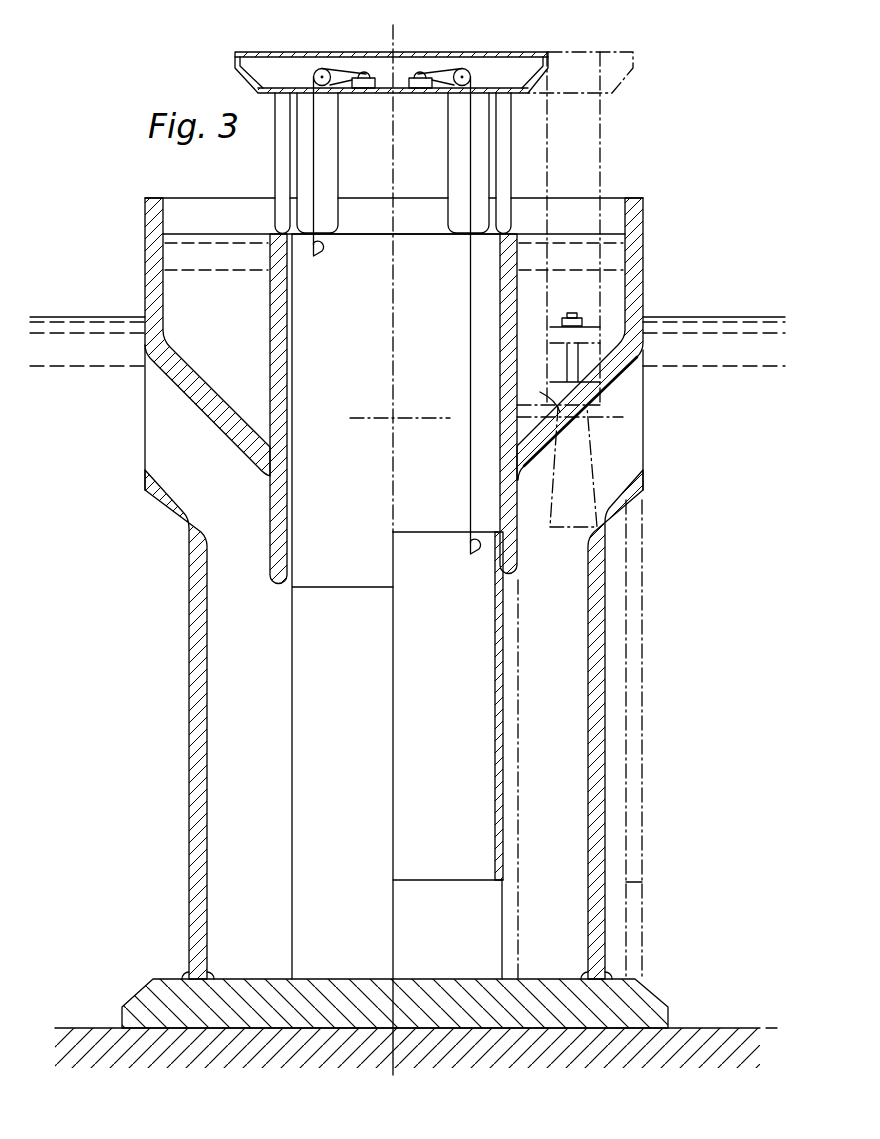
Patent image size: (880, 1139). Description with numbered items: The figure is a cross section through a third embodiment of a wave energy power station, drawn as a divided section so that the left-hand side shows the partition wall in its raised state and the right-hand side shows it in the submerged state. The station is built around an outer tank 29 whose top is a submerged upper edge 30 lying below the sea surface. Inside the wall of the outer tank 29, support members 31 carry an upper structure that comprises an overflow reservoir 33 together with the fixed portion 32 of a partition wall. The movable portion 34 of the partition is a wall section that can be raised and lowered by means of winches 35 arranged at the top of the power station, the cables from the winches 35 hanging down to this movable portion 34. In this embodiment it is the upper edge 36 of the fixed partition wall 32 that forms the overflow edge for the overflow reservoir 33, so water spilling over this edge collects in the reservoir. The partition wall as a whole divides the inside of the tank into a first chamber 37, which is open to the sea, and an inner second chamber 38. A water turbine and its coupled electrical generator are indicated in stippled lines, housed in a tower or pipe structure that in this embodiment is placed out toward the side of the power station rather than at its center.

The outer tank 29 is at (605, 737).
The submerged upper edge 30 is at (643, 473).
The support members 31 is at (191, 576).
The fixed portion of partition wall 32 is at (515, 287).
The overflow reservoir 33 is at (190, 297).
The movable portion of partition wall 34 is at (500, 669).
The winches 35 is at (367, 75).
The upper edge of fixed partition wall 36 is at (515, 232).
The first chamber 37 is at (567, 688).
The second chamber 38 is at (485, 505).